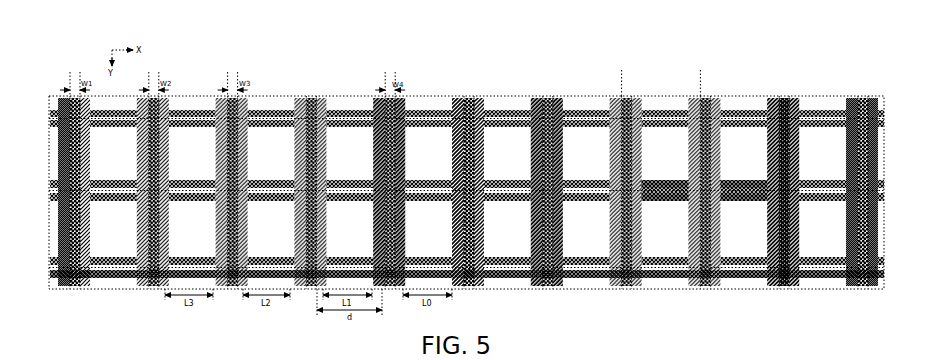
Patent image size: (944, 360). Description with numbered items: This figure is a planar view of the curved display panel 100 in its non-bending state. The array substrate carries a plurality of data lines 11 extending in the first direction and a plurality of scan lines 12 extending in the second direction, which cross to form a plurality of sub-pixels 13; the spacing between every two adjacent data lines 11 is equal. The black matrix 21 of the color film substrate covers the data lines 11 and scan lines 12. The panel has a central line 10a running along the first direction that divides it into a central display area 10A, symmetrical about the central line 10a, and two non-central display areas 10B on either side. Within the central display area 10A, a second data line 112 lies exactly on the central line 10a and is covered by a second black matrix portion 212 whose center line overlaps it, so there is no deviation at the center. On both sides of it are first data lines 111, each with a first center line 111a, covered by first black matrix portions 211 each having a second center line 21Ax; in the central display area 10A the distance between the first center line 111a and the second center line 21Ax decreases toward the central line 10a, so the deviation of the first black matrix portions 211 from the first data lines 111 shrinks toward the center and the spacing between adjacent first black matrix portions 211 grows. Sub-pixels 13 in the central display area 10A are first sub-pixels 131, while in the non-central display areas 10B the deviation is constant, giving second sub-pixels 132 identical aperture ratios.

The curved display panel 100 is at (68, 57).
The central display area 10A is at (468, 292).
The non-central display areas 10B is at (61, 292).
The central line 10a is at (468, 72).
The second center line 21Ax is at (386, 79).
The first center line 111a is at (392, 79).
The second data line 112 is at (456, 97).
The second black matrix portion 212 is at (480, 97).
The first data lines 111 is at (538, 97).
The first black matrix portions 211 is at (558, 97).
The first sub-pixels 131 is at (674, 125).
The second sub-pixels 132 is at (735, 125).
The data lines 11 is at (778, 97).
The scan lines 12 is at (807, 100).
The sub-pixels 13 is at (828, 128).
The black matrix 21 is at (866, 97).